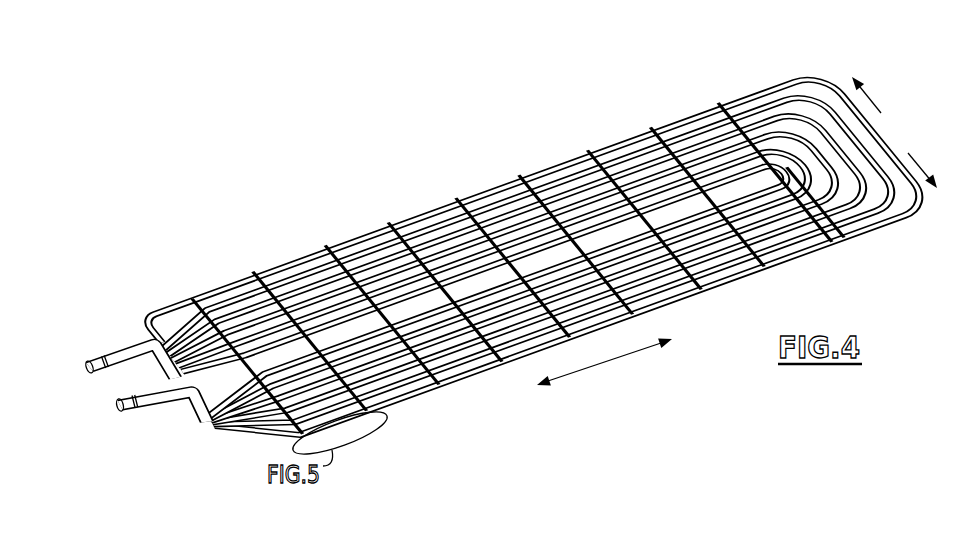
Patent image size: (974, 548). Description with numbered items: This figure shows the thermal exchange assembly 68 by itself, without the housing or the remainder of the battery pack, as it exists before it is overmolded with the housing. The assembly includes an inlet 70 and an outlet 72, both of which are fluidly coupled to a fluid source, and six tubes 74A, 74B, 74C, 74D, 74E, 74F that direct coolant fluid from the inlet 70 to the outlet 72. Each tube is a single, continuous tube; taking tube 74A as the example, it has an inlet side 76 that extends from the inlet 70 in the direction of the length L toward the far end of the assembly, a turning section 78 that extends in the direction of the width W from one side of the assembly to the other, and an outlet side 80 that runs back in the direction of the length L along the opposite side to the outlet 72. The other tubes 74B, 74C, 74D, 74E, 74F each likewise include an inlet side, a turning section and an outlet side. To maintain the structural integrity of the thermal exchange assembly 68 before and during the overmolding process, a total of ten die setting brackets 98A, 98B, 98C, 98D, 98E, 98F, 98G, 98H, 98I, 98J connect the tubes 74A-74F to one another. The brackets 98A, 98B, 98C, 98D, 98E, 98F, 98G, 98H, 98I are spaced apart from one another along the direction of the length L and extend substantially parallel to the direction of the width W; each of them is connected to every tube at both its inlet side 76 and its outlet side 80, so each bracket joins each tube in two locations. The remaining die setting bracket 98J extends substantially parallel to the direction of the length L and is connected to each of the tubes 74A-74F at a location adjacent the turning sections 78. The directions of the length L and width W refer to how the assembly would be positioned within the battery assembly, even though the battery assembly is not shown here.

The thermal exchange assembly 68 is at (313, 244).
The inlet 70 is at (163, 405).
The outlet 72 is at (125, 345).
The tube 74A is at (402, 402).
The tube 74B is at (436, 374).
The tube 74C is at (452, 353).
The tube 74D is at (467, 333).
The tube 74E is at (512, 302).
The tube 74F is at (535, 279).
The inlet side 76 is at (487, 376).
The turning section 78 is at (889, 149).
The outlet side 80 is at (378, 233).
The die setting bracket 98A is at (191, 303).
The die setting bracket 98B is at (253, 273).
The die setting bracket 98C is at (325, 246).
The die setting bracket 98D is at (388, 224).
The die setting bracket 98E is at (456, 199).
The die setting bracket 98F is at (519, 176).
The die setting bracket 98G is at (588, 151).
The die setting bracket 98H is at (651, 128).
The die setting bracket 98I is at (718, 104).
The die setting bracket 98J is at (783, 173).
The width W is at (870, 92).
The length L is at (625, 360).